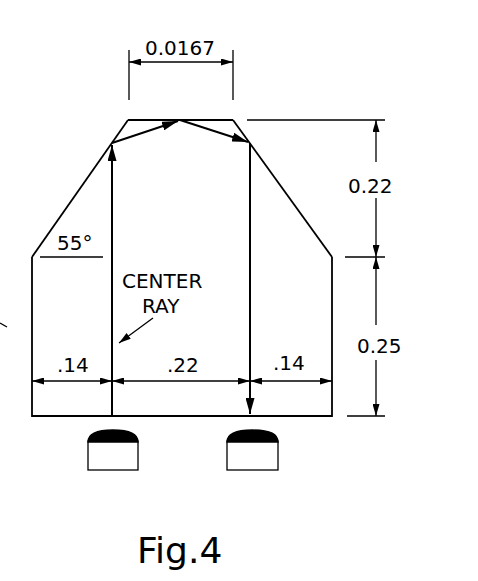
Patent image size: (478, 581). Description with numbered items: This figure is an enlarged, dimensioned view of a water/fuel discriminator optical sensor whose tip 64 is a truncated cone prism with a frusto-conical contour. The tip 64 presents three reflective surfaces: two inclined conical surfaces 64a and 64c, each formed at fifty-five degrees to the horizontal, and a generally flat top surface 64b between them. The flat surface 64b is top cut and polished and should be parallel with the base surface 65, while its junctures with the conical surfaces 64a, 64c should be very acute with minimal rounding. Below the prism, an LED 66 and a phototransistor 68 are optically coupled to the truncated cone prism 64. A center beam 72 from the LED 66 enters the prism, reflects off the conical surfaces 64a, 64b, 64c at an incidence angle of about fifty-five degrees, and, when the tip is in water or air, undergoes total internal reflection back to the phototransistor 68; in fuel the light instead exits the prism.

The truncated cone prism tip 64 is at (171, 279).
The conical reflective surface 64a is at (100, 158).
The flat reflective surface 64b is at (220, 120).
The conical reflective surface 64c is at (268, 165).
The surface 65 is at (45, 419).
The LED 66 is at (138, 450).
The phototransistor 68 is at (278, 452).
The center beam 72 is at (250, 248).